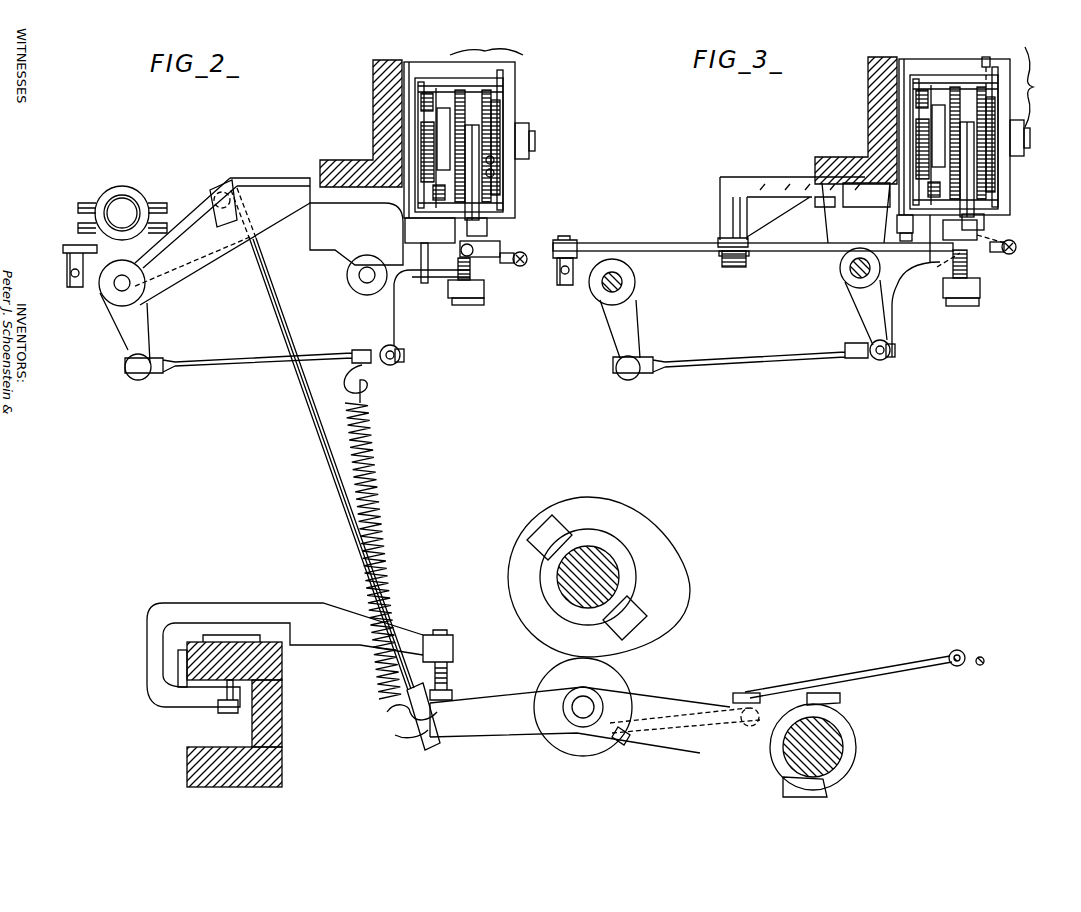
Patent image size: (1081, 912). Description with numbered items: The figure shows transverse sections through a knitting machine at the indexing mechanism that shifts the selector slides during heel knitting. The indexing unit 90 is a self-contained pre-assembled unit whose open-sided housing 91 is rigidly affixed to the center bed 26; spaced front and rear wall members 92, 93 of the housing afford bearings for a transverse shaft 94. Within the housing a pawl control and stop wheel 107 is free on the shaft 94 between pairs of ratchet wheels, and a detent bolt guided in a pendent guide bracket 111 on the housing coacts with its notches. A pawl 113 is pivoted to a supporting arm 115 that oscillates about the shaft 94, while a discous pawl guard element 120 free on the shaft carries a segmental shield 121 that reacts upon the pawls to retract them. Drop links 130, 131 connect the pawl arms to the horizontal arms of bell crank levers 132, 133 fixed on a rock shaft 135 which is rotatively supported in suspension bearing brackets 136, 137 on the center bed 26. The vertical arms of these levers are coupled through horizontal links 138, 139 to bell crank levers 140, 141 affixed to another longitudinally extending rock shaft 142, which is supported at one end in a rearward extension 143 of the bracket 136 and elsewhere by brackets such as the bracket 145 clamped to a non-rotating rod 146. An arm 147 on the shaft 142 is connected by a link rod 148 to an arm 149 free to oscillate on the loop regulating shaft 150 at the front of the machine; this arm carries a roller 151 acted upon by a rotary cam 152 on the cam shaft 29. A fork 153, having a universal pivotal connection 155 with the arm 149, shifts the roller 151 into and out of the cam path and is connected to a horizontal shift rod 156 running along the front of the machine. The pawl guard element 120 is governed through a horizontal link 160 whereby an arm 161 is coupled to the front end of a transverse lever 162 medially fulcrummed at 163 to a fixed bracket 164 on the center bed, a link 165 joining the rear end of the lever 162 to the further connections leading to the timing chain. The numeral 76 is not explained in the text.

In FIG. 2, the center bed 26 is at (374, 103).
In FIG. 3, the center bed 26 is at (856, 120).
In FIG. 2, the cam shaft 29 is at (587, 552).
In FIG. 2, the pin 76 is at (990, 661).
In FIG. 2, the indexing unit 90 is at (486, 39).
In FIG. 3, the indexing unit 90 is at (1043, 87).
In FIG. 2, the housing 91 is at (412, 66).
In FIG. 3, the housing 91 is at (950, 122).
In FIG. 2, the front wall member 92 is at (506, 90).
In FIG. 2, the rear wall member 93 is at (410, 92).
In FIG. 2, the transverse shaft 94 is at (536, 138).
In FIG. 3, the transverse shaft 94 is at (1037, 138).
In FIG. 3, the pawl control and stop wheel 107 is at (968, 118).
In FIG. 2, the pendent guide bracket 111 is at (472, 306).
In FIG. 3, the pendent guide bracket 111 is at (980, 290).
In FIG. 2, the pawl 113 is at (490, 133).
In FIG. 3, the supporting arm 115 is at (941, 99).
In FIG. 3, the pawl guard element 120 is at (998, 53).
In FIG. 2, the segmental shield 121 is at (498, 172).
In FIG. 2, the drop link 130 is at (488, 228).
In FIG. 3, the drop link 130 is at (985, 212).
In FIG. 3, the drop link 131 is at (1010, 242).
In FIG. 2, the bell crank lever 132 is at (396, 322).
In FIG. 2, the bell crank lever 133 is at (392, 355).
In FIG. 3, the bell crank lever 133 is at (893, 326).
In FIG. 2, the rock shaft 135 is at (360, 276).
In FIG. 3, the rock shaft 135 is at (855, 275).
In FIG. 2, the suspension bearing bracket 136 is at (356, 234).
In FIG. 3, the suspension bearing bracket 137 is at (836, 232).
In FIG. 2, the horizontal link 138 is at (255, 365).
In FIG. 3, the horizontal link 139 is at (772, 362).
In FIG. 2, the bell crank lever 140 is at (120, 345).
In FIG. 3, the bell crank lever 141 is at (612, 340).
In FIG. 2, the rock shaft 142 is at (122, 285).
In FIG. 3, the rock shaft 142 is at (630, 282).
In FIG. 2, the rearward extension 143 is at (218, 278).
In FIG. 2, the bracket 145 is at (103, 192).
In FIG. 2, the non-rotating rod 146 is at (126, 198).
In FIG. 2, the arm 147 is at (203, 210).
In FIG. 2, the link rod 148 is at (302, 437).
In FIG. 2, the arm 149 is at (493, 702).
In FIG. 2, the loop regulating shaft 150 is at (840, 749).
In FIG. 2, the roller 151 is at (617, 683).
In FIG. 2, the rotary cam 152 is at (668, 535).
In FIG. 2, the fork 153 is at (889, 674).
In FIG. 2, the universal pivotal connection 155 is at (746, 690).
In FIG. 2, the horizontal shift rod 156 is at (957, 652).
In FIG. 2, the horizontal link 160 is at (523, 266).
In FIG. 3, the horizontal link 160 is at (1016, 253).
In FIG. 2, the arm 161 is at (495, 260).
In FIG. 3, the arm 161 is at (990, 228).
In FIG. 3, the transverse lever 162 is at (673, 243).
In FIG. 3, the fulcrum 163 is at (733, 267).
In FIG. 2, the fixed bracket 164 is at (276, 180).
In FIG. 3, the fixed bracket 164 is at (752, 180).
In FIG. 2, the link 165 is at (63, 273).
In FIG. 3, the link 165 is at (565, 286).